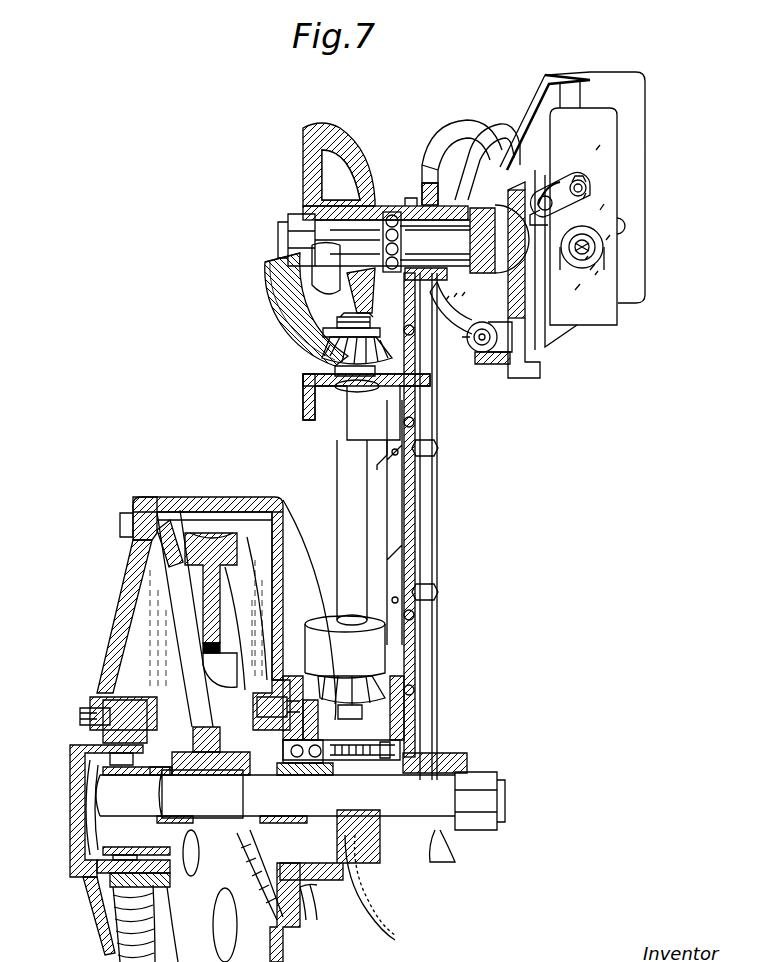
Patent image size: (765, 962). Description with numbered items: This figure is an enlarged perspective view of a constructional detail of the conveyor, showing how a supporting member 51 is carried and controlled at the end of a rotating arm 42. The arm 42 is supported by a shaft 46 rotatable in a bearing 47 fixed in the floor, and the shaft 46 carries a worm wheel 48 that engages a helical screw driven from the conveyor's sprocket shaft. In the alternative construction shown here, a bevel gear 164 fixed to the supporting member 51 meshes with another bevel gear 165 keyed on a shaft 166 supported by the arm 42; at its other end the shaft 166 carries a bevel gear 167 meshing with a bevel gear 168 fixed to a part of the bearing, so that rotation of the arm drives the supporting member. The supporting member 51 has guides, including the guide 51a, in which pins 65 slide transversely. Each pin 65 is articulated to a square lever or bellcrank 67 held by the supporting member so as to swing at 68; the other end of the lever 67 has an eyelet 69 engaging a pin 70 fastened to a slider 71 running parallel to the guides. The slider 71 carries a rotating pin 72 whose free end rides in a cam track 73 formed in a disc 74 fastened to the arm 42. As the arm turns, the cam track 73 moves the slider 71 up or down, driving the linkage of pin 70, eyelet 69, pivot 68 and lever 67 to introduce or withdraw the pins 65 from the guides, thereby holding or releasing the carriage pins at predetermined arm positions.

The bevel gear 164 is at (305, 134).
The disc 74 is at (450, 122).
The cam track 73 is at (500, 128).
The supporting member 51 is at (535, 100).
The guide 51a is at (620, 155).
The eyelet 69 is at (553, 198).
The pin 70 is at (566, 186).
The swinging point 68 is at (586, 184).
The square lever 67 is at (580, 228).
The pin 65 is at (622, 229).
The bevel gear 165 is at (318, 355).
The rotating pin 72 is at (470, 350).
The slider 71 is at (538, 362).
The shaft 166 is at (345, 442).
The arm 42 is at (420, 493).
The bearing 47 is at (193, 497).
The worm wheel 48 is at (222, 530).
The shaft 46 is at (90, 752).
The bevel gear 167 is at (385, 690).
The bevel gear 168 is at (370, 888).